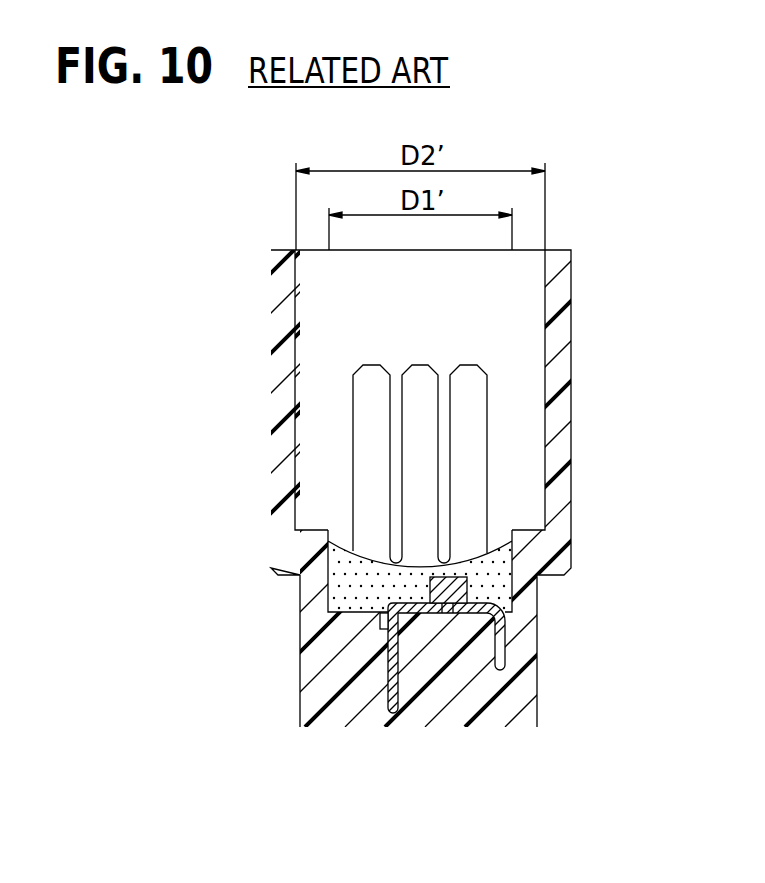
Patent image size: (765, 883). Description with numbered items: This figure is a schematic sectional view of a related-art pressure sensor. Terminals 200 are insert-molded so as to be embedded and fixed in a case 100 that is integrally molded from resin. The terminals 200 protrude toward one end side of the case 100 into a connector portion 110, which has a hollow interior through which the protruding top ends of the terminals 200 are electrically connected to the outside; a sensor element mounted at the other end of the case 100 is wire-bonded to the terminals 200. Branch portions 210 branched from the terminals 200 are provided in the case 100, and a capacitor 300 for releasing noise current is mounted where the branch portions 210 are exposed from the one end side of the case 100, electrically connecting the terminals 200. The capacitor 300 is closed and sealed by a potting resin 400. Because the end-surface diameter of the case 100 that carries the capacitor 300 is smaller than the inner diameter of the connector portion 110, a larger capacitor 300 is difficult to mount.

The case 100 is at (318, 667).
The connector portion 110 is at (282, 320).
The terminals 200 is at (370, 375).
The branch portions 210 is at (505, 626).
The capacitor 300 is at (467, 592).
The potting resin 400 is at (330, 588).